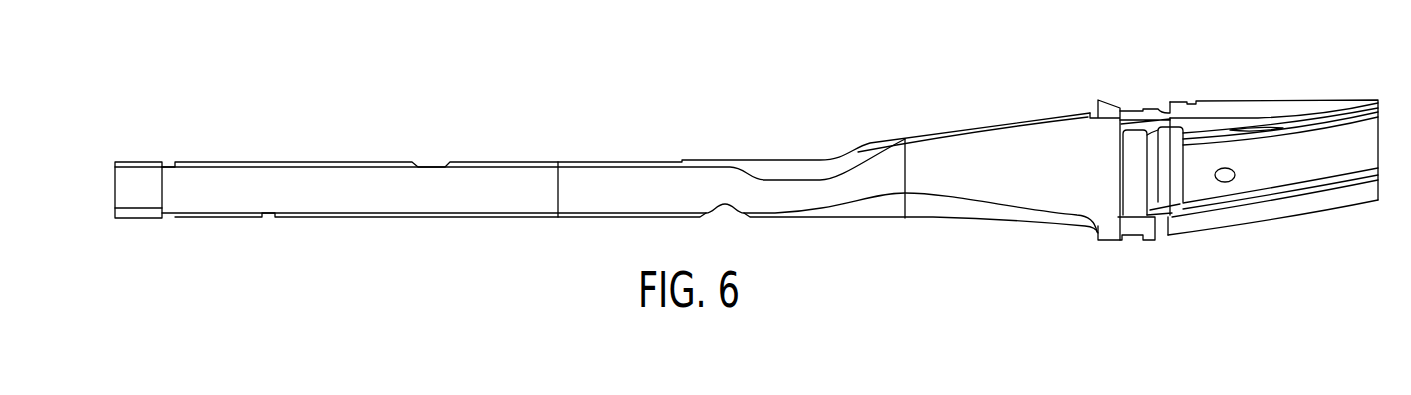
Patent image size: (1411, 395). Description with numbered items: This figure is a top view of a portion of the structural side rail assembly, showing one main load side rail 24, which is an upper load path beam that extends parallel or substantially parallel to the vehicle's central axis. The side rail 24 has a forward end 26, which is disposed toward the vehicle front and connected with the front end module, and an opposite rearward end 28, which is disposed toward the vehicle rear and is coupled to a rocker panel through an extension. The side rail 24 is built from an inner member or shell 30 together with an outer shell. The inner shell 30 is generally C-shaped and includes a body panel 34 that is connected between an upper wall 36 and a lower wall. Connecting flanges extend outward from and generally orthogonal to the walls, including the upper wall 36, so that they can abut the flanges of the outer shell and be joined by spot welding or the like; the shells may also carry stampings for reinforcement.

The main load side rail 24 is at (1043, 87).
The forward end 26 is at (118, 149).
The rearward end 28 is at (1322, 83).
The inner member or shell 30 is at (620, 158).
The body panel 34 is at (355, 218).
The upper wall 36 is at (205, 203).